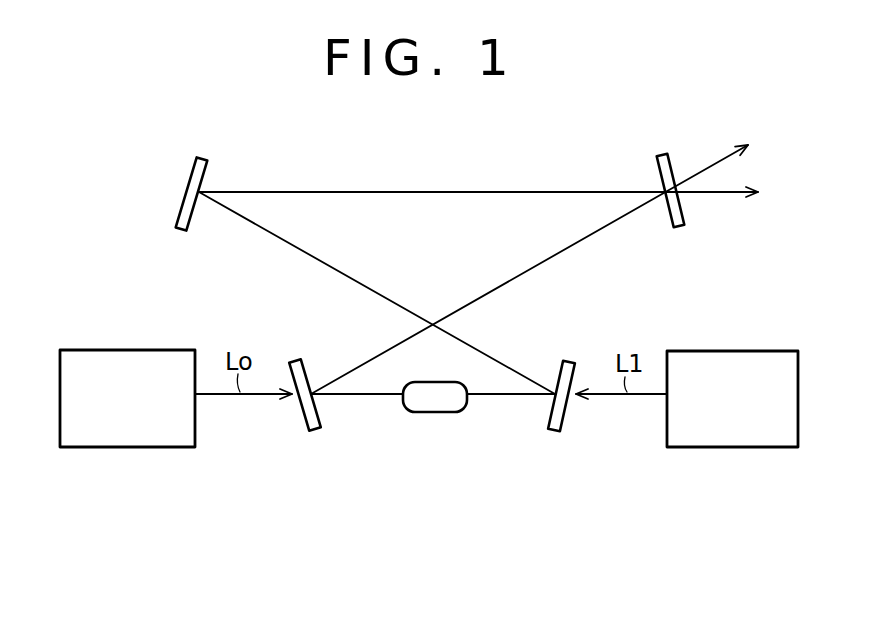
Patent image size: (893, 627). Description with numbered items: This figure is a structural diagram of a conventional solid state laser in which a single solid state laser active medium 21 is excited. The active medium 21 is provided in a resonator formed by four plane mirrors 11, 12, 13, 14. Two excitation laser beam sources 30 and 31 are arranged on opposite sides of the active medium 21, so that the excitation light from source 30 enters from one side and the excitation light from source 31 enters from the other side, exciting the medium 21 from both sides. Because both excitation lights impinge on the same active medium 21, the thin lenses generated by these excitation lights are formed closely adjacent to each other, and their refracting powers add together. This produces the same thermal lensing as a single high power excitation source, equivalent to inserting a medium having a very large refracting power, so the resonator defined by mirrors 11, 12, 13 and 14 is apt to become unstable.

The plane mirror 11 is at (190, 183).
The plane mirror 12 is at (672, 163).
The plane mirror 13 is at (317, 432).
The plane mirror 14 is at (553, 432).
The solid state laser active medium 21 is at (435, 413).
The excitation laser beam source 30 is at (125, 350).
The excitation laser beam source 31 is at (735, 350).